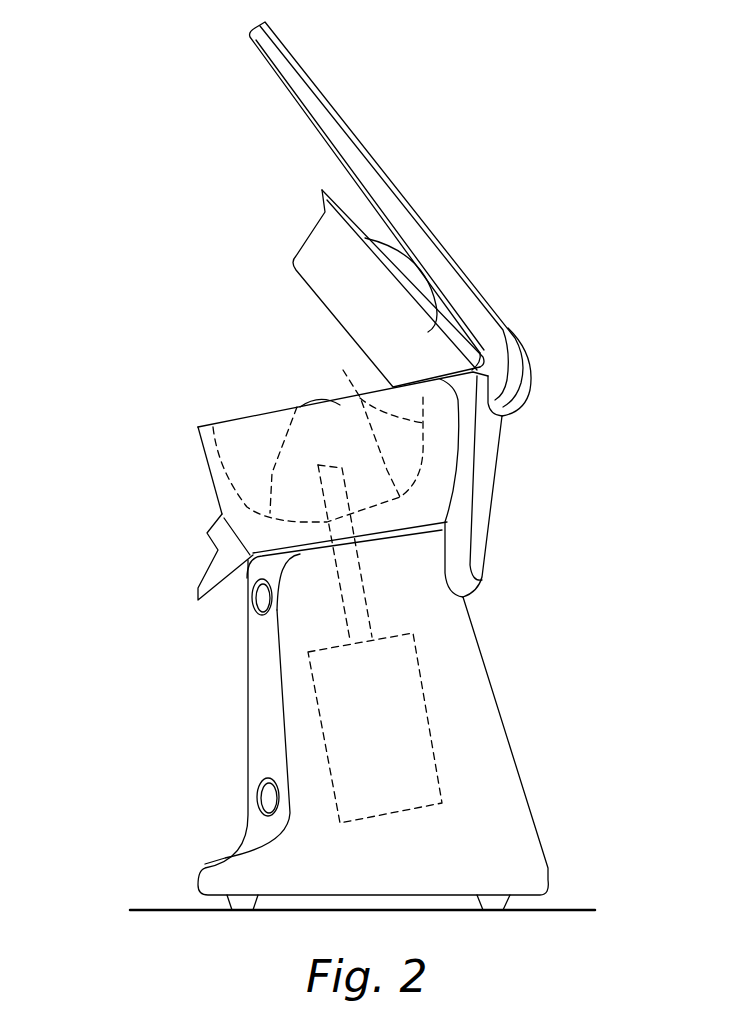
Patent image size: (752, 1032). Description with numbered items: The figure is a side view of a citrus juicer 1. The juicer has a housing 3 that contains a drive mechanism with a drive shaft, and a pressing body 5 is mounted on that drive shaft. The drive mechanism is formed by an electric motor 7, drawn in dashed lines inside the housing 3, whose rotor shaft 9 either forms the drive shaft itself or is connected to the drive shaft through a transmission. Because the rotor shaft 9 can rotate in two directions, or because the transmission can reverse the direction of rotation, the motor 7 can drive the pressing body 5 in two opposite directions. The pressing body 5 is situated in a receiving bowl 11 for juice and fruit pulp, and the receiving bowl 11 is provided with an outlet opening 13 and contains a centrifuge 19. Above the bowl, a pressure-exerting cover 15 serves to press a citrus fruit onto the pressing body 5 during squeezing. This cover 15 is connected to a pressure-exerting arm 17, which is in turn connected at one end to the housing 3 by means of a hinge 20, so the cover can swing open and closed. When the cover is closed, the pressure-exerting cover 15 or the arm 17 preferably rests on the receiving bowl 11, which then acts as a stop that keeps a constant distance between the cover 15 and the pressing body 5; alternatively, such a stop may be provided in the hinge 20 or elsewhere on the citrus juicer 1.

The citrus juicer 1 is at (106, 296).
The housing 3 is at (492, 795).
The pressing body 5 is at (283, 447).
The electric motor 7 is at (400, 708).
The rotor shaft 9 is at (367, 577).
The receiving bowl 11 is at (215, 482).
The outlet opening 13 is at (210, 584).
The pressure-exerting cover 15 is at (317, 250).
The pressure-exerting arm 17 is at (352, 153).
The centrifuge 19 is at (343, 370).
The hinge 20 is at (505, 392).